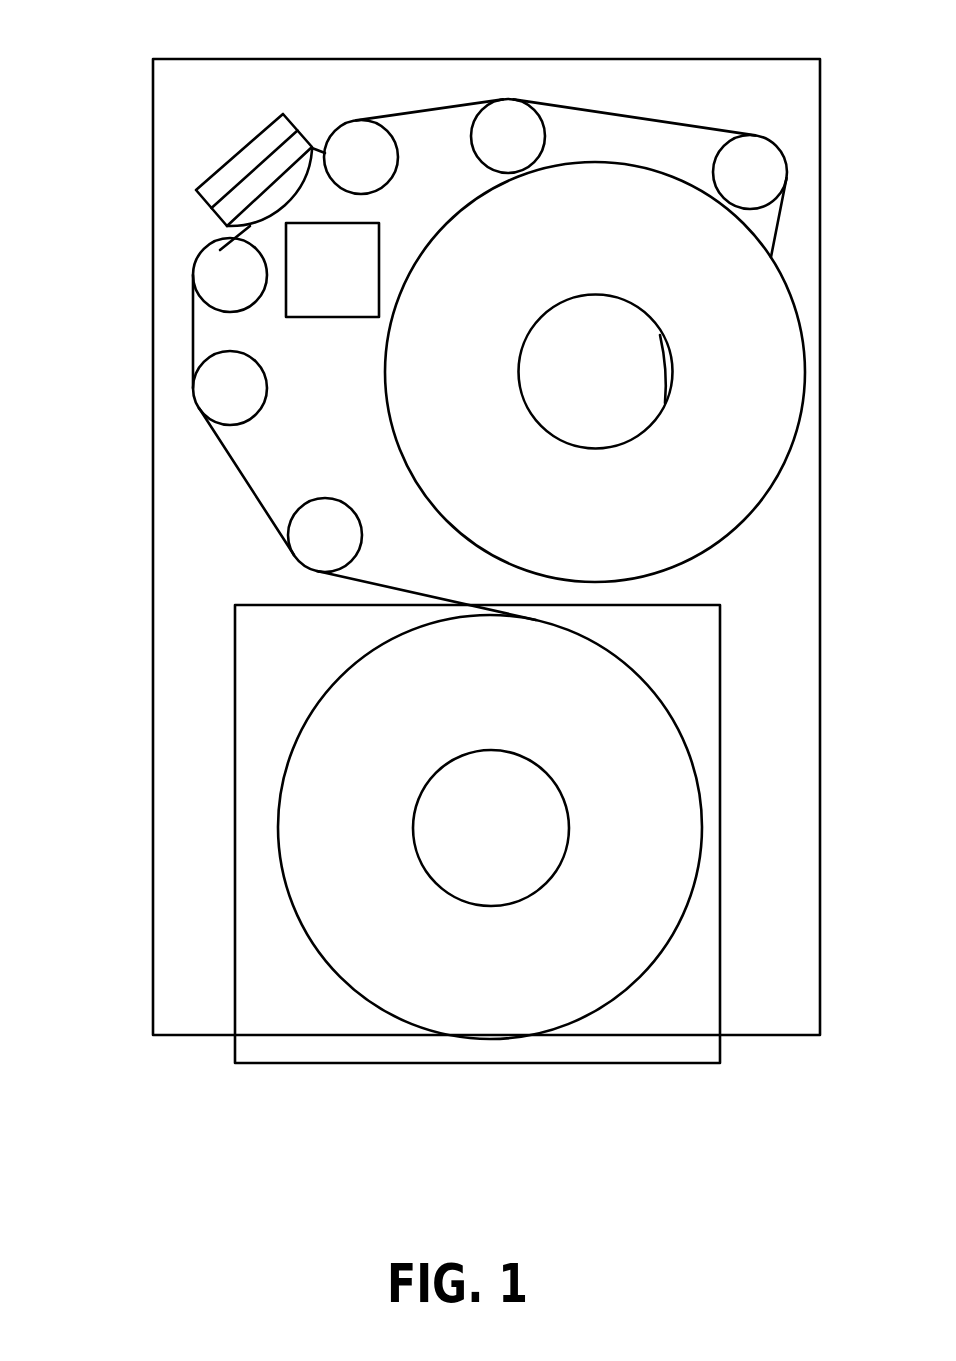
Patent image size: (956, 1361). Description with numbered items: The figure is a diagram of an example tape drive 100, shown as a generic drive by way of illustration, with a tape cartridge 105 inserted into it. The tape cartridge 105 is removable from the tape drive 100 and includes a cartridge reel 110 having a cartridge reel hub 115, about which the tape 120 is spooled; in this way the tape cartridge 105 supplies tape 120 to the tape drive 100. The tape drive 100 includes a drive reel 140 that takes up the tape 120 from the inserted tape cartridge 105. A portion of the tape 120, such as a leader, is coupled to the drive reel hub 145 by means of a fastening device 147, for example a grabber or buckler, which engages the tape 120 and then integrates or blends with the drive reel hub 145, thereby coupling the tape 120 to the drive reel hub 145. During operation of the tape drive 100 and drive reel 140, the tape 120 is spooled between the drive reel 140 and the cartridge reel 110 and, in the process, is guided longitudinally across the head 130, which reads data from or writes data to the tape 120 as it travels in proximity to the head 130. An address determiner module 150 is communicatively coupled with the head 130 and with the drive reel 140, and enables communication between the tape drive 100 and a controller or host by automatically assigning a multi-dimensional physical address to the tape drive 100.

The tape drive 100 is at (108, 60).
The tape cartridge 105 is at (235, 608).
The cartridge reel 110 is at (331, 690).
The cartridge reel hub 115 is at (414, 807).
The tape 120 is at (638, 125).
The head 130 is at (252, 143).
The drive reel 140 is at (384, 382).
The drive reel hub 145 is at (523, 339).
The fastening device 147 is at (663, 336).
The address determiner module 150 is at (355, 285).